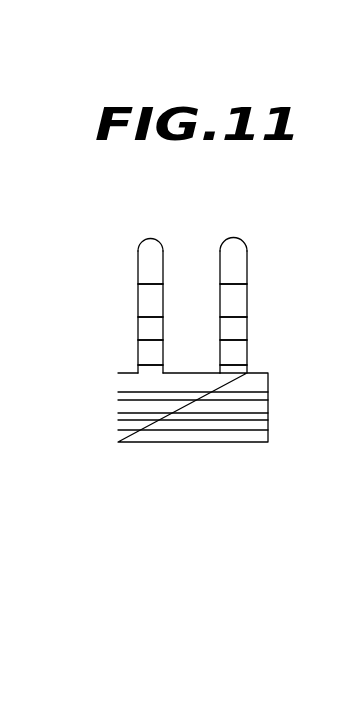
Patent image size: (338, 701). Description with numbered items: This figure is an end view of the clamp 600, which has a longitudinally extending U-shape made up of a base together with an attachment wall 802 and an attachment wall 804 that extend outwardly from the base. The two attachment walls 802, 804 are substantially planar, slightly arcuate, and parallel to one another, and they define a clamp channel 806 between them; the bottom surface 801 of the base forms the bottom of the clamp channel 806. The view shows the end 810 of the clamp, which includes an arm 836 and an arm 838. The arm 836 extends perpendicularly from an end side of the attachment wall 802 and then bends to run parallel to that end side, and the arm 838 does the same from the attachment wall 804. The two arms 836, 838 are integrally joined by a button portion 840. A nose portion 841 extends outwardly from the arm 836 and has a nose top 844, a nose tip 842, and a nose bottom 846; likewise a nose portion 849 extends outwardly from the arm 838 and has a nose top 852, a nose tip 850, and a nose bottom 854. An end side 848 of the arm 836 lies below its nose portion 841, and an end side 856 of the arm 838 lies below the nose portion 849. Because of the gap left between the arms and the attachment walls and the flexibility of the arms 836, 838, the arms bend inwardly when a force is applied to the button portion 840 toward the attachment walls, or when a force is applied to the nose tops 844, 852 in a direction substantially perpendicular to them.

The clamp 600 is at (213, 502).
The bottom surface 801 is at (186, 373).
The attachment wall 802 is at (138, 268).
The attachment wall 804 is at (248, 266).
The clamp channel 806 is at (190, 315).
The end 810 is at (121, 457).
The arm 836 is at (142, 252).
The arm 838 is at (243, 253).
The button portion 840 is at (132, 410).
The nose portion 841 is at (162, 307).
The nose tip 842 is at (149, 322).
The nose top 844 is at (152, 307).
The nose bottom 846 is at (144, 329).
The end side 848 is at (148, 355).
The nose portion 849 is at (221, 307).
The nose tip 850 is at (237, 323).
The nose top 852 is at (233, 310).
The nose bottom 854 is at (238, 334).
The end side 856 is at (238, 355).